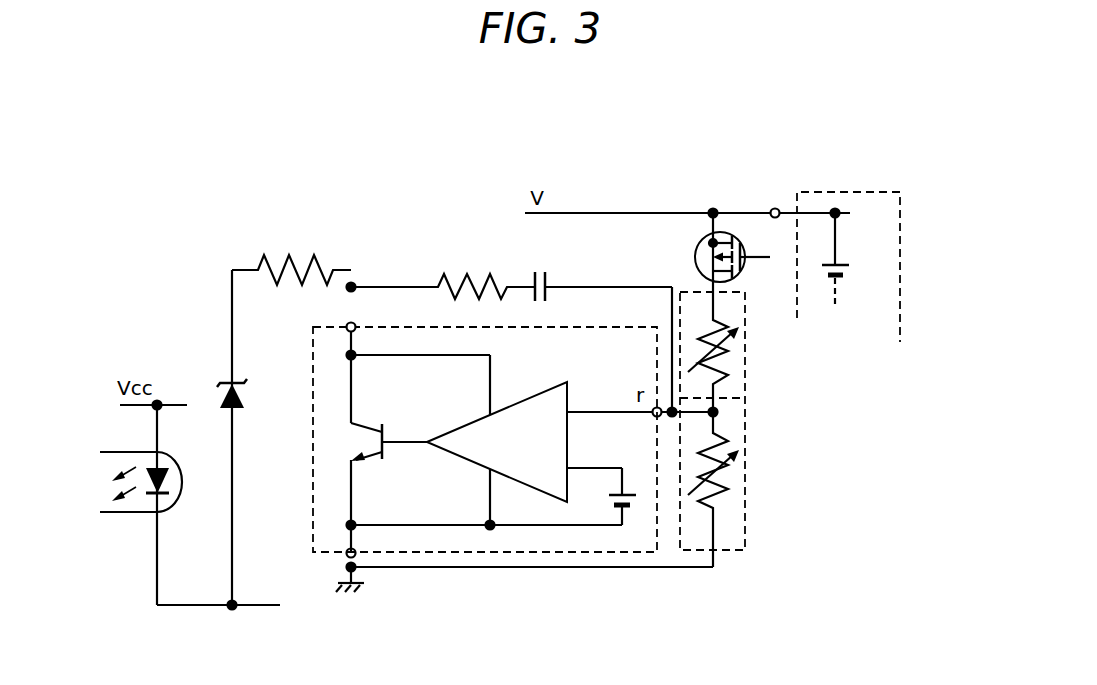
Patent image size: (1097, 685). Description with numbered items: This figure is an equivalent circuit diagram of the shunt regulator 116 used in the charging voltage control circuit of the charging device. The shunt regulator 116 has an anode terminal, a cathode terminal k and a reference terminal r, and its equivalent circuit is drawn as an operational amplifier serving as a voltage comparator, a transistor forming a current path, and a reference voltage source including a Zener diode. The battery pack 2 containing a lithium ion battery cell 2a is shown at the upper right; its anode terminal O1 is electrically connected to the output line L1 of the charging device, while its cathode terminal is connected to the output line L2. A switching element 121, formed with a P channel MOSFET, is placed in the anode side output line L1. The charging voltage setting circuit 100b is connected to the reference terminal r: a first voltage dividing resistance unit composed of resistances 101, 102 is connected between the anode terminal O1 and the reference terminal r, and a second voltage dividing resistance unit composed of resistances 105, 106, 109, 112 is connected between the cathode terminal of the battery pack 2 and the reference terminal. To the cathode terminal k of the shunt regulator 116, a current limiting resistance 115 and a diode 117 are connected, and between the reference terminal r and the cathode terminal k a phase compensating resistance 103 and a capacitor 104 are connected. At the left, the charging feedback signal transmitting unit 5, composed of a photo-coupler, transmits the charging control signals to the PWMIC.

The battery pack 2 is at (851, 190).
The battery cell 2a is at (841, 278).
The charging feedback signal transmitting unit 5 is at (122, 520).
The charging voltage setting circuit 100b is at (690, 290).
The resistance 101 is at (795, 363).
The resistance 102 is at (720, 358).
The phase compensating resistance 103 is at (463, 276).
The capacitor 104 is at (549, 292).
The resistance 105 is at (846, 489).
The resistance 106 is at (846, 489).
The resistance 109 is at (846, 489).
The resistance 112 is at (720, 483).
The current limiting resistance 115 is at (308, 261).
The shunt regulator 116 is at (312, 449).
The diode 117 is at (239, 393).
The switching element 121 is at (736, 281).
The output line L1 is at (632, 213).
The output line L2 is at (532, 569).
The anode terminal O1 is at (775, 206).